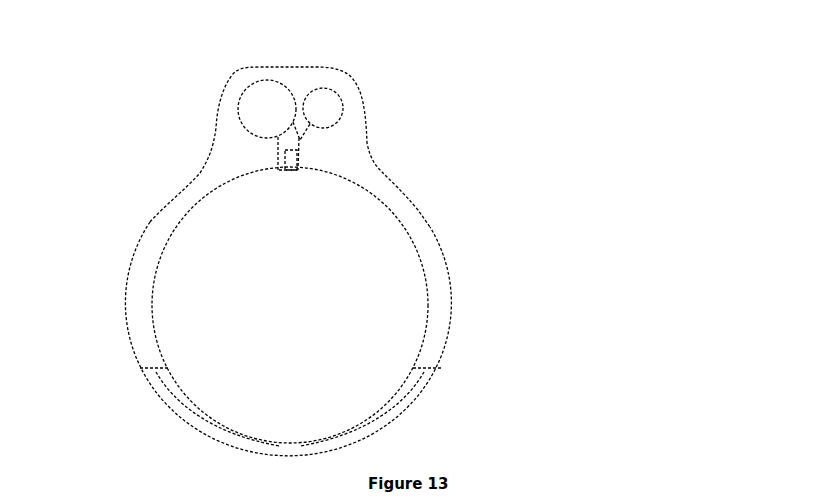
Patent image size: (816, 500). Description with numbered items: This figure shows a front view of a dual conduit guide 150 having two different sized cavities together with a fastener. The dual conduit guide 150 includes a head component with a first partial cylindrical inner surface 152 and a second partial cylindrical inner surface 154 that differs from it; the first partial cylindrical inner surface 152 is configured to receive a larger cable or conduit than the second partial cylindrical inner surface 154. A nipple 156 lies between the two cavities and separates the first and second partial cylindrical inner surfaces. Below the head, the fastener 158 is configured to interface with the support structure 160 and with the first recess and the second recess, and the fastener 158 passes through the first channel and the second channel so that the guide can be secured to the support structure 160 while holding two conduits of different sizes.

The dual conduit guide 150 is at (138, 297).
The first partial cylindrical inner surface 152 is at (238, 116).
The second partial cylindrical inner surface 154 is at (343, 110).
The nipple 156 is at (299, 110).
The fastener 158 is at (285, 153).
The support structure 160 is at (291, 171).